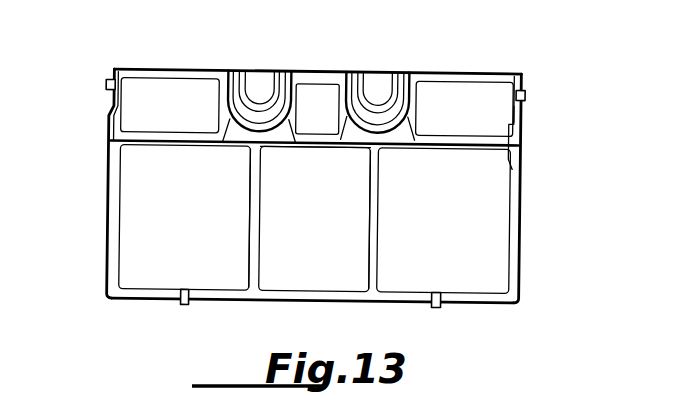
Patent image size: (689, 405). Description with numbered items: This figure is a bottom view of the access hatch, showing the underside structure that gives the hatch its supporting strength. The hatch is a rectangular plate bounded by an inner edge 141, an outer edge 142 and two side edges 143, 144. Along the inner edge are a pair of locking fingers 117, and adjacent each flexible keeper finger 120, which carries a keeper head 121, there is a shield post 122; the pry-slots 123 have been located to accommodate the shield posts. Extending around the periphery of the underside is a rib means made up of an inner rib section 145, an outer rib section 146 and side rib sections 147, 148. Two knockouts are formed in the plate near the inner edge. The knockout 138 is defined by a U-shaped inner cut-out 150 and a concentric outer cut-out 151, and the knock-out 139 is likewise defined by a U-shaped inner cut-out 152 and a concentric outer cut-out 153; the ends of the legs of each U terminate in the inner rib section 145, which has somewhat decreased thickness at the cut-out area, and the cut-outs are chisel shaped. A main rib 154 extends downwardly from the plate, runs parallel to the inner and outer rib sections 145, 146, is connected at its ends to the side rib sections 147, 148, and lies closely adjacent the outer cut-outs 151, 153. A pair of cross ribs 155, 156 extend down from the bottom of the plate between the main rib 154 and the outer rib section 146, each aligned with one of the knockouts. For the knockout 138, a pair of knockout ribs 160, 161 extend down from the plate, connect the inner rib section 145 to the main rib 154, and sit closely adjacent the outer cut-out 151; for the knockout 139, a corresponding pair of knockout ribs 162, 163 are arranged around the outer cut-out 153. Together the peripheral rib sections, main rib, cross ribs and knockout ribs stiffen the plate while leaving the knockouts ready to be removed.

The locking fingers 117 is at (187, 289).
The flexible keeper finger 120 is at (104, 87).
The keeper head 121 is at (524, 94).
The shield post 122 is at (112, 104).
The pry-slots 123 is at (108, 139).
The knockout 138 is at (377, 68).
The knock-out 139 is at (257, 68).
The inner edge 141 is at (449, 70).
The outer edge 142 is at (357, 299).
The side edge 143 is at (520, 246).
The side edge 144 is at (108, 201).
The inner rib section 145 is at (151, 70).
The outer rib section 146 is at (337, 292).
The side rib section 147 is at (113, 252).
The side rib section 148 is at (512, 194).
The U-shaped inner cut-out 150 is at (390, 93).
The outer cut-out 151 is at (407, 111).
The U-shaped inner cut-out 152 is at (242, 85).
The outer cut-out 153 is at (230, 103).
The main rib 154 is at (318, 141).
The cross rib 155 is at (256, 231).
The cross rib 156 is at (373, 232).
The knockout rib 160 is at (407, 125).
The knockout rib 161 is at (331, 108).
The knockout rib 162 is at (227, 121).
The knockout rib 163 is at (288, 115).